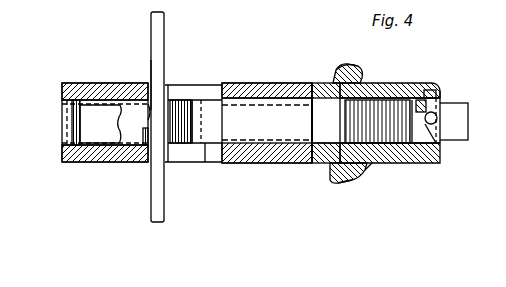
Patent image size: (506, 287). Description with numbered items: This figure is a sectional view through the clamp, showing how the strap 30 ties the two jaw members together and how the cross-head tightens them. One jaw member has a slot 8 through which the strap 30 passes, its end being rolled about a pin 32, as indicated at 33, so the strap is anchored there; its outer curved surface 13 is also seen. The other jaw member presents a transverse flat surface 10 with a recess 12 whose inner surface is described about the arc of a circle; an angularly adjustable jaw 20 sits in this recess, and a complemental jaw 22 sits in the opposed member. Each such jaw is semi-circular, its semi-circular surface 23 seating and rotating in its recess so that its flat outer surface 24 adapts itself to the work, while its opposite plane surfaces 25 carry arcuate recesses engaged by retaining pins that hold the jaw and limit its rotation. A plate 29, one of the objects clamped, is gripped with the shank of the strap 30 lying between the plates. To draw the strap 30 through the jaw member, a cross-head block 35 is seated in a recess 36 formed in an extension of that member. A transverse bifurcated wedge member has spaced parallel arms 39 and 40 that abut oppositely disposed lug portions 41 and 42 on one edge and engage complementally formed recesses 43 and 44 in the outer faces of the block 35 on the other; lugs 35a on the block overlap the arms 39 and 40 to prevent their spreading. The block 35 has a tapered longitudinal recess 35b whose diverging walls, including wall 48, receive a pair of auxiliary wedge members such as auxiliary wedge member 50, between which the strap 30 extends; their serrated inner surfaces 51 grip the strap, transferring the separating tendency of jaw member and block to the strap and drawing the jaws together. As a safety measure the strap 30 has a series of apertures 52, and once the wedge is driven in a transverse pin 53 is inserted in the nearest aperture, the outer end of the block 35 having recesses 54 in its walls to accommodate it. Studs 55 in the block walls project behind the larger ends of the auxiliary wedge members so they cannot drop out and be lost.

The slot 8 is at (214, 163).
The transverse flat surface 10 is at (170, 162).
The recess 12 is at (203, 100).
The outer curved surface 13 is at (62, 160).
The angularly adjustable jaw 20 is at (183, 100).
The angularly adjustable jaw 22 is at (146, 150).
The semi-circular surface 23 is at (190, 100).
The flat outer surface 24 is at (150, 82).
The plane surface 25 is at (160, 80).
The plate 29 is at (168, 104).
The strap 30 is at (90, 127).
The pin 32 is at (62, 143).
The rolled end 33 is at (70, 117).
The cross-head block 35 is at (412, 83).
The lug 35a is at (352, 67).
The tapered longitudinal recess 35b is at (340, 118).
The recess 36 is at (297, 163).
The wedge arm 39 is at (337, 70).
The wedge arm 40 is at (322, 163).
The lug portion 41 is at (303, 83).
The lug portion 42 is at (287, 163).
The recess 43 is at (366, 100).
The recess 44 is at (345, 182).
The diverging wall 48 is at (378, 172).
The auxiliary wedge member 50 is at (436, 93).
The serrated inner surface 51 is at (396, 163).
The aperture 52 is at (438, 132).
The transverse pin 53 is at (430, 163).
The recess 54 is at (433, 142).
The stud 55 is at (428, 107).